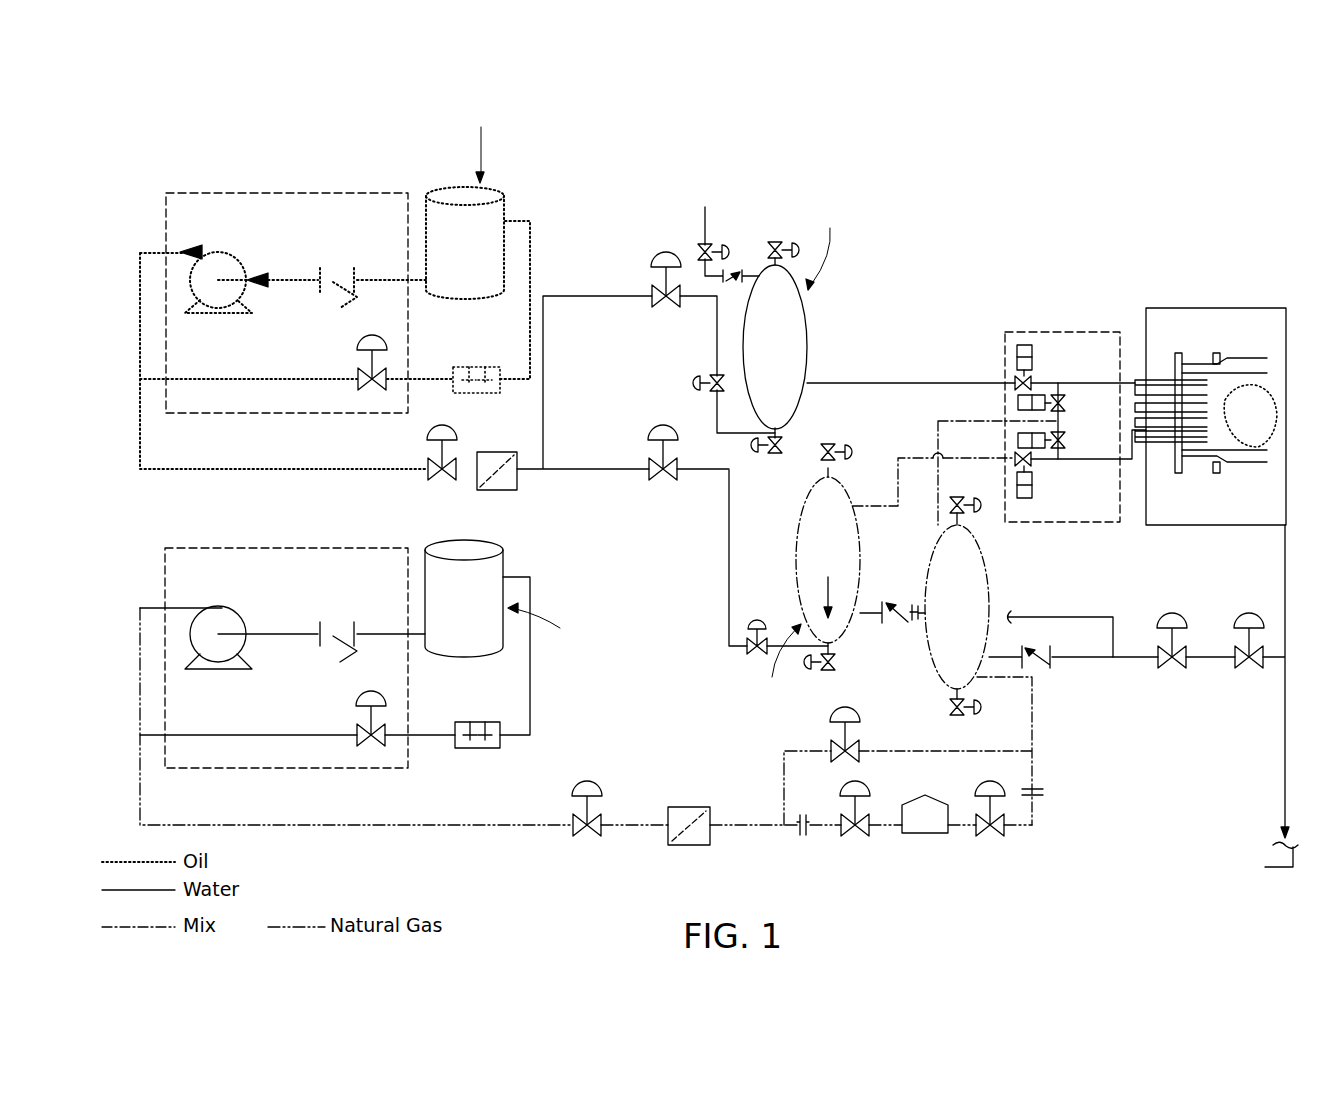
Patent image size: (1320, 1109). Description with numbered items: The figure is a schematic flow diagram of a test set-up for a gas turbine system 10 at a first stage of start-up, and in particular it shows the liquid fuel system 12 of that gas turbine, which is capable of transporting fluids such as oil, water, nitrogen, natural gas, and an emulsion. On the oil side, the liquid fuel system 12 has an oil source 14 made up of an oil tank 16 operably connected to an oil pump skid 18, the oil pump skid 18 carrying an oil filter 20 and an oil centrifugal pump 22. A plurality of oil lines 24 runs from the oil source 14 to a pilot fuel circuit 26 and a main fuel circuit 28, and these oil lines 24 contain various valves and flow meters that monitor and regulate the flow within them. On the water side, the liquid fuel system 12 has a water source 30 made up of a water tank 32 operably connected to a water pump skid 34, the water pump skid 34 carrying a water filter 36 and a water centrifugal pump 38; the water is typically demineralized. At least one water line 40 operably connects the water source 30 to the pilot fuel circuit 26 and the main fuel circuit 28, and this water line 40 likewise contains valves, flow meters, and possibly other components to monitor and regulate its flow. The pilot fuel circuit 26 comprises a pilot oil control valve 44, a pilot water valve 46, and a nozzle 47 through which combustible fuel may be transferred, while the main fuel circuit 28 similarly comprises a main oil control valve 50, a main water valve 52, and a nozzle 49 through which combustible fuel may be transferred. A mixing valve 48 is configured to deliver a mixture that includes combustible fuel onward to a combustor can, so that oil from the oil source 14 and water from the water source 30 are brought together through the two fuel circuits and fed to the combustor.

The gas turbine system 10 is at (891, 258).
The liquid fuel system 12 is at (995, 523).
The oil source 14 is at (506, 181).
The oil tank 16 is at (458, 185).
The oil pump skid 18 is at (288, 194).
The oil filter 20 is at (334, 268).
The oil centrifugal pump 22 is at (243, 263).
The oil lines 24 is at (589, 468).
The pilot fuel circuit 26 is at (815, 351).
The main fuel circuit 28 is at (802, 505).
The water source 30 is at (544, 571).
The water tank 32 is at (488, 540).
The water pump skid 34 is at (297, 549).
The water filter 36 is at (331, 632).
The water centrifugal pump 38 is at (243, 617).
The water line 40 is at (501, 827).
The pilot oil control valve 44 is at (1014, 382).
The pilot water valve 46 is at (1063, 400).
The nozzle 47 is at (1150, 378).
The mixing valve 48 is at (1045, 330).
The nozzle 49 is at (1168, 450).
The main oil control valve 50 is at (1033, 462).
The main water valve 52 is at (1063, 446).